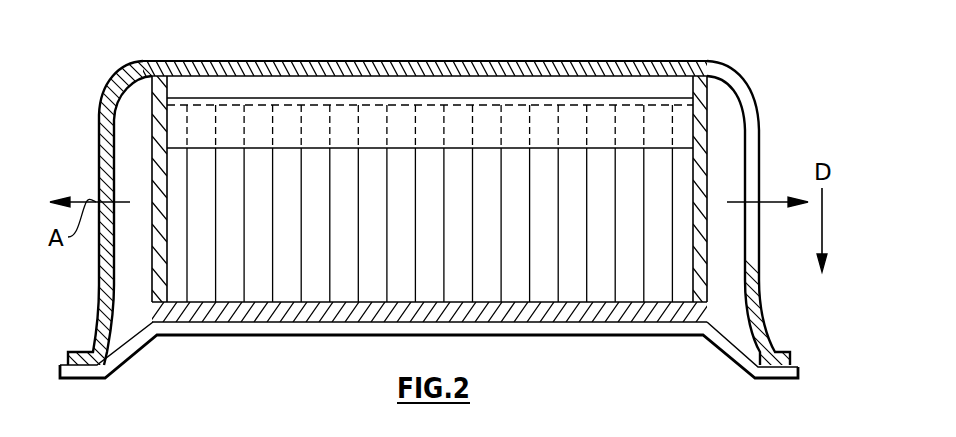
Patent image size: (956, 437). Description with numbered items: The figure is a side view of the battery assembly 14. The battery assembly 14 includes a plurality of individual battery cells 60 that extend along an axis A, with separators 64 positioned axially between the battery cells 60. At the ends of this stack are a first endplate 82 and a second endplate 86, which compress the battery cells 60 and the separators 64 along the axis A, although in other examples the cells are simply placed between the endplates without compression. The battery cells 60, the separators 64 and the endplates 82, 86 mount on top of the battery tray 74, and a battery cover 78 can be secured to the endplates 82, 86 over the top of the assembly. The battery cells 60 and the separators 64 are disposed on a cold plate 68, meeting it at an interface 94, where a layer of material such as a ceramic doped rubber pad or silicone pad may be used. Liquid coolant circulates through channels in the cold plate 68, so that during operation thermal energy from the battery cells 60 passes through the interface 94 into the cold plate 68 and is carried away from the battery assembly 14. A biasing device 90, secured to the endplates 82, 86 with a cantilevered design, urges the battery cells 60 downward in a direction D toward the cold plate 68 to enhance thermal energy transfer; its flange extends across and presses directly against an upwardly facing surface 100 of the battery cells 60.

The battery assembly 14 is at (765, 88).
The battery cells 60 is at (258, 287).
The separators 64 is at (302, 282).
The cold plate 68 is at (607, 318).
The battery tray 74 is at (742, 352).
The battery cover 78 is at (627, 70).
The first endplate 82 is at (697, 193).
The second endplate 86 is at (160, 133).
The biasing device 90 is at (373, 190).
The interface 94 is at (486, 300).
The upwardly facing surface 100 is at (487, 105).